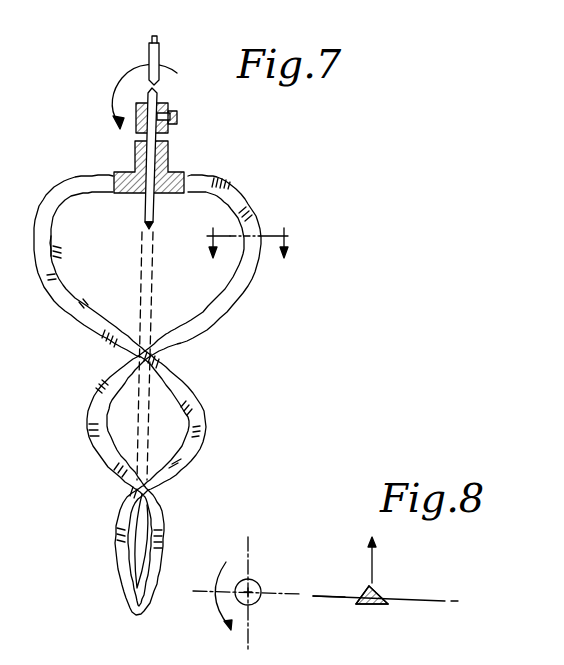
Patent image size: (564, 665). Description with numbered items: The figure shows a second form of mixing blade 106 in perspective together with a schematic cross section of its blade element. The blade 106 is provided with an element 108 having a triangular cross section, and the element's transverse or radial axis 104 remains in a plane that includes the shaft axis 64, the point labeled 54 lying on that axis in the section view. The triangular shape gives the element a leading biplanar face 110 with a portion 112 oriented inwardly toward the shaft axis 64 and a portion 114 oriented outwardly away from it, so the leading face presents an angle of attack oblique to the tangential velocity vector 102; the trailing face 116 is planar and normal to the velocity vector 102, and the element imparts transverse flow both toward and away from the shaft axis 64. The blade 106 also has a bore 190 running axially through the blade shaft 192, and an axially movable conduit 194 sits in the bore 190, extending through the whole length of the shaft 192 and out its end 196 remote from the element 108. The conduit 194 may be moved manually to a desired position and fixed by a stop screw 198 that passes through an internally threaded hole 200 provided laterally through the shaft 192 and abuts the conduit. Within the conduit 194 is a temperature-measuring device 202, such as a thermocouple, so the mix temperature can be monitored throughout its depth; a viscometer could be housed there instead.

In FIG. 7, the mixing blade 106 is at (154, 325).
In FIG. 7, the element 108 is at (82, 171).
In FIG. 7, the leading biplanar face 110 is at (49, 272).
In FIG. 8, the leading biplanar face 110 is at (374, 586).
In FIG. 7, the bore 190 is at (155, 163).
In FIG. 7, the blade shaft 192 is at (164, 135).
In FIG. 7, the axially movable conduit 194 is at (145, 213).
In FIG. 7, the end 196 is at (160, 100).
In FIG. 7, the stop screw 198 is at (174, 121).
In FIG. 7, the internally threaded hole 200 is at (160, 112).
In FIG. 7, the temperature-measuring device 202 is at (146, 228).
In FIG. 8, the axis of rotation 54 is at (259, 583).
In FIG. 8, the shaft axis 64 is at (253, 597).
In FIG. 8, the tangential velocity vector 102 is at (367, 562).
In FIG. 8, the transverse or radial axis 104 is at (324, 598).
In FIG. 8, the portion 112 is at (362, 588).
In FIG. 8, the portion 114 is at (380, 597).
In FIG. 8, the trailing face 116 is at (380, 604).